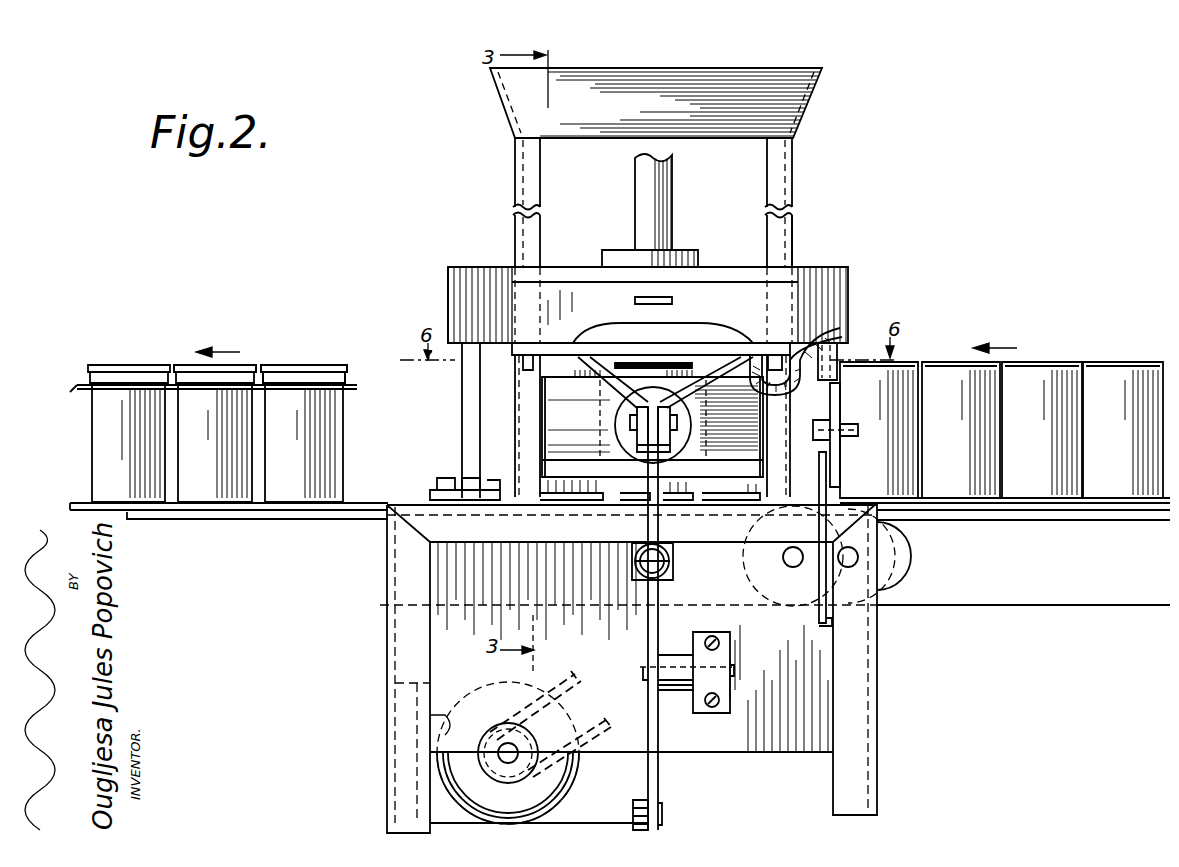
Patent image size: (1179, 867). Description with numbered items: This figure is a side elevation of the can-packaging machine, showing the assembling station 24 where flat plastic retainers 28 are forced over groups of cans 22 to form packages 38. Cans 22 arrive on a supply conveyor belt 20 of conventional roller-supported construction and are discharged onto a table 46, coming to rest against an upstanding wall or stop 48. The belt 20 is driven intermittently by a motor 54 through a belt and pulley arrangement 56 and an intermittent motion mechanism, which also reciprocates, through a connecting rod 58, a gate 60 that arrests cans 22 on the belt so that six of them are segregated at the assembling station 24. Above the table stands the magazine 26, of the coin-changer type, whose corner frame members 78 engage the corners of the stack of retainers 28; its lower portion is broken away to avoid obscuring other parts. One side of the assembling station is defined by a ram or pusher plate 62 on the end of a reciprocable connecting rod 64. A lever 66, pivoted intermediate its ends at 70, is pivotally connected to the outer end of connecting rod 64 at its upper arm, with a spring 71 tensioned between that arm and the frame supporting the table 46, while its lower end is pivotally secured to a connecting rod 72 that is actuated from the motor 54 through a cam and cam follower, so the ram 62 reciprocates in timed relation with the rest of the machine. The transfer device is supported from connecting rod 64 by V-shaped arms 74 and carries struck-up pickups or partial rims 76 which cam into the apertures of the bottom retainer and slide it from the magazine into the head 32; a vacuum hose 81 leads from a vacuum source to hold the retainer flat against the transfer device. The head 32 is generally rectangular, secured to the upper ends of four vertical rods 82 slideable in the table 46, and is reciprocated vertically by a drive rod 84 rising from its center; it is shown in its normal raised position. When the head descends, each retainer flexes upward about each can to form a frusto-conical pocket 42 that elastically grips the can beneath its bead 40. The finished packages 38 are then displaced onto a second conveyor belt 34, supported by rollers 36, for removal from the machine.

The supply conveyor belt 20 is at (1106, 602).
The cans 22 is at (185, 365).
The assembling station 24 is at (487, 258).
The magazine 26 is at (812, 236).
The plastic retainers 28 is at (78, 387).
The head 32 is at (856, 268).
The conveyor belt 34 is at (272, 508).
The rollers 36 is at (885, 585).
The packages 38 is at (284, 346).
The beads 40 is at (341, 365).
The frusto-conical section or pocket 42 is at (345, 379).
The table 46 is at (636, 500).
The upstanding wall or stop 48 is at (512, 400).
The motor 54 is at (478, 690).
The belt and pulley arrangement 56 is at (572, 672).
The connecting rod 58 is at (830, 620).
The gate 60 is at (840, 473).
The ram or pusher plate 62 is at (698, 500).
The connecting rod 64 is at (640, 420).
The lever 66 is at (660, 727).
The pivot 70 is at (714, 672).
The spring 71 is at (671, 572).
The connecting rod 72 is at (634, 797).
The V-shaped arms 74 is at (620, 398).
The pickups or partial rims 76 is at (655, 342).
The corner frame members 78 is at (528, 171).
The vacuum hose 81 is at (842, 330).
The vertical rods 82 is at (463, 452).
The drive rod 84 is at (822, 78).